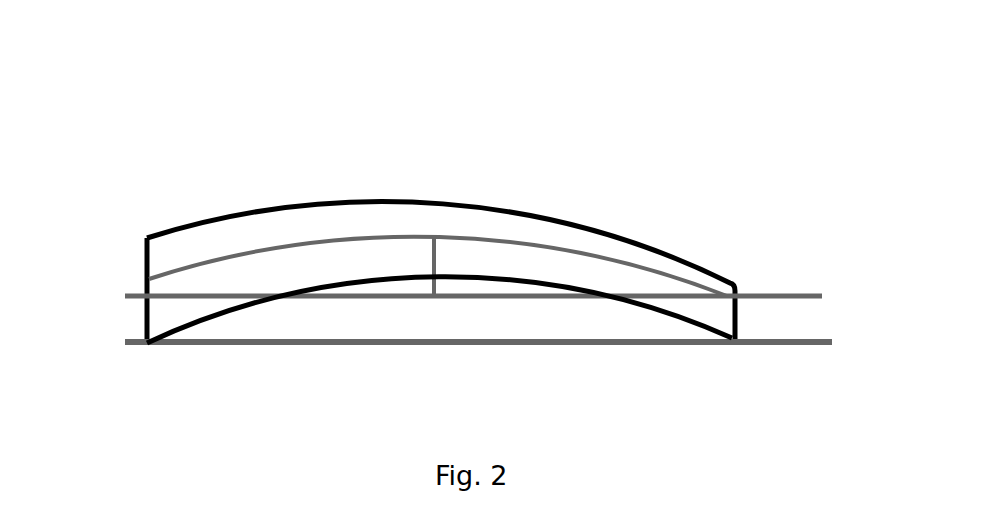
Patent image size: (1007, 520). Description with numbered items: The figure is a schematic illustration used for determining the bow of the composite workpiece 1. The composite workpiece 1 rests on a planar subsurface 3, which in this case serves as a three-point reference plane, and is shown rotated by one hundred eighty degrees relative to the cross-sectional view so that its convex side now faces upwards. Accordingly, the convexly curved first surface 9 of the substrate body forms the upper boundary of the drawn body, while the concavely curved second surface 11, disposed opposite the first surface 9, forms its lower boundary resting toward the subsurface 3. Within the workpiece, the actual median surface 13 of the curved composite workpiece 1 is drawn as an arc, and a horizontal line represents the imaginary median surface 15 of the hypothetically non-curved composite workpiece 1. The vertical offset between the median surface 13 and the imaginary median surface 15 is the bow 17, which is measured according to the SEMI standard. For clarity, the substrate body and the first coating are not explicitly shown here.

The composite workpiece 1 is at (158, 192).
The first surface 9 is at (362, 180).
The median surface 13 is at (230, 250).
The bow 17 is at (440, 262).
The imaginary median surface 15 is at (758, 288).
The planar subsurface 3 is at (800, 335).
The second surface 11 is at (277, 320).